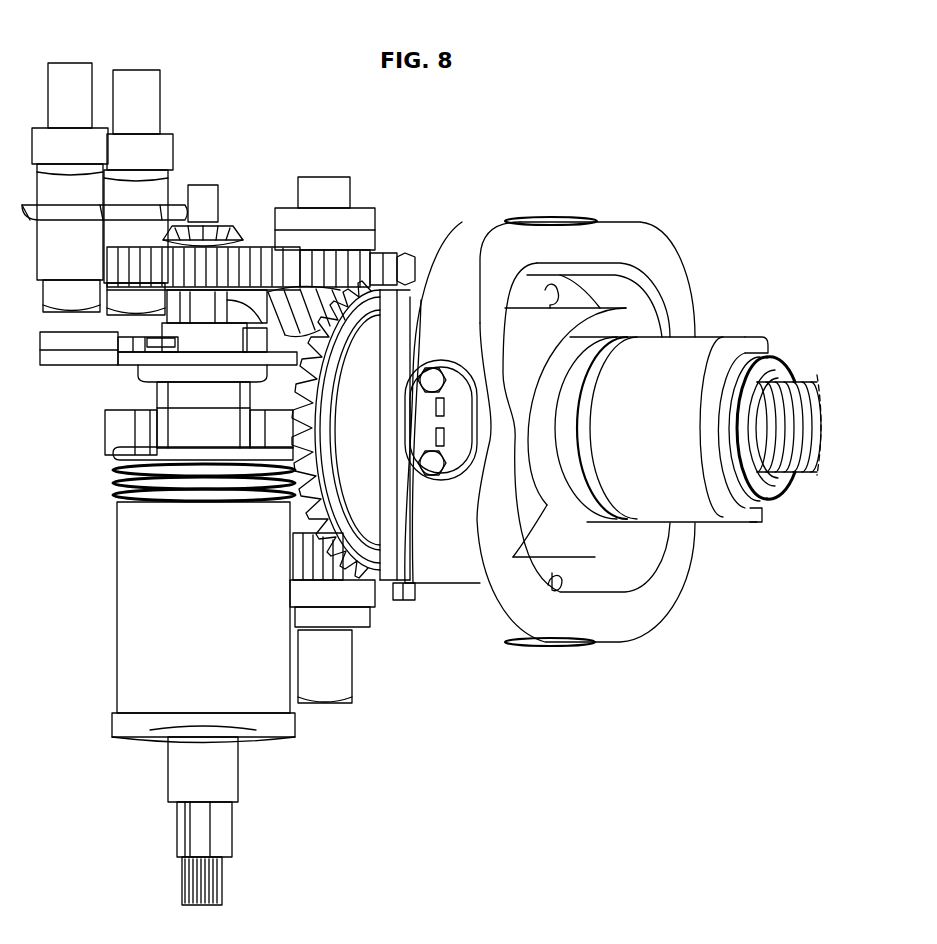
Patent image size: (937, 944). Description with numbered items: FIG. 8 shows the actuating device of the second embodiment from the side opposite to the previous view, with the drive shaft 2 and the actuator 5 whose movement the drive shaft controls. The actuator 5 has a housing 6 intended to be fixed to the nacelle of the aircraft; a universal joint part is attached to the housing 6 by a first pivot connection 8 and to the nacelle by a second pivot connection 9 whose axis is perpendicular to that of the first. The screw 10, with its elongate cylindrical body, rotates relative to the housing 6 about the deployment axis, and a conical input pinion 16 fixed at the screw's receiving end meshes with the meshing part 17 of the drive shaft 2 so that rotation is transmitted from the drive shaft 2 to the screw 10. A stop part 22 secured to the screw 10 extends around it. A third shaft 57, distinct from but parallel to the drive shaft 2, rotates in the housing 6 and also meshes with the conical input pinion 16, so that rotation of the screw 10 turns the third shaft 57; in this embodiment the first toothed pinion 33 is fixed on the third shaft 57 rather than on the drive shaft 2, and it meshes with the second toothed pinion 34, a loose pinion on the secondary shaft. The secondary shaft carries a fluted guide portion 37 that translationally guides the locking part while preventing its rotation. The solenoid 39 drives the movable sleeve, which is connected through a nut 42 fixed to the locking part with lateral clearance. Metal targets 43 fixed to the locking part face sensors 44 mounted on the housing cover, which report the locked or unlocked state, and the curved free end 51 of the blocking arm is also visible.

The drive shaft 2 is at (337, 668).
The actuator 5 is at (737, 282).
The housing 6 is at (423, 590).
The first pivot connection 8 is at (410, 380).
The second pivot connection 9 is at (545, 217).
The screw 10 is at (790, 462).
The conical input pinion 16 is at (300, 410).
The meshing part 17 is at (313, 562).
The stop part 22 is at (753, 488).
The first toothed pinion 33 is at (378, 263).
The second toothed pinion 34 is at (252, 260).
The fluted guide portion 37 is at (198, 313).
The solenoid 39 is at (128, 655).
The nut 42 is at (118, 458).
The metal targets 43 is at (65, 348).
The sensors 44 is at (70, 77).
The free end 51 is at (115, 432).
The third shaft 57 is at (322, 184).